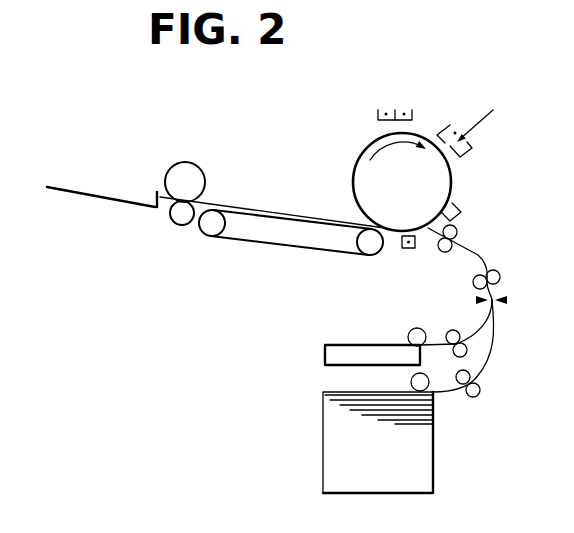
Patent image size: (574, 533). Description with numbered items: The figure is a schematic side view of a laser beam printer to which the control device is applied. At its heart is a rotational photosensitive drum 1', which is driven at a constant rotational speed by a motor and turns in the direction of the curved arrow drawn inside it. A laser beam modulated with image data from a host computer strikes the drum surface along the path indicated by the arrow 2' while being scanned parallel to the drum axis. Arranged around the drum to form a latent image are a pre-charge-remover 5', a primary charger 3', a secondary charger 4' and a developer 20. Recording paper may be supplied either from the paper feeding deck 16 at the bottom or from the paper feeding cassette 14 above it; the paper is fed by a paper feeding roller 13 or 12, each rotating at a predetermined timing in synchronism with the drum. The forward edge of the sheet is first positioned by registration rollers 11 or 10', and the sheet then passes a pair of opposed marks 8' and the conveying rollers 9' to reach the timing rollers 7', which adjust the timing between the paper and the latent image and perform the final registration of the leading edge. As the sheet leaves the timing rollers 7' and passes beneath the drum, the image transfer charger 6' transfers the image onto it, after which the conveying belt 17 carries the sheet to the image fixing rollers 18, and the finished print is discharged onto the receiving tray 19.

The rotational photosensitive drum 1' is at (430, 182).
The arrow 2' is at (475, 107).
The primary charger 3' is at (408, 89).
The secondary charger 4' is at (479, 141).
The pre-charge-remover 5' is at (374, 89).
The image transfer charger 6' is at (408, 264).
The timing rollers 7' is at (479, 234).
The cutter 8' is at (517, 313).
The conveying rollers 9' is at (516, 277).
The registration rollers 10' is at (446, 321).
The registration rollers 11 is at (480, 392).
The paper feeding roller 12 is at (408, 333).
The paper feeding roller 13 is at (411, 382).
The paper feeding cassette 14 is at (324, 355).
The paper feeding deck 16 is at (425, 470).
The conveying belt 17 is at (288, 213).
The image fixing rollers 18 is at (185, 161).
The receiving tray 19 is at (96, 193).
The developer 20 is at (462, 211).